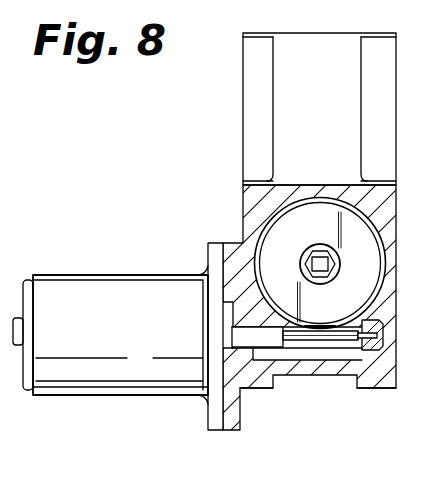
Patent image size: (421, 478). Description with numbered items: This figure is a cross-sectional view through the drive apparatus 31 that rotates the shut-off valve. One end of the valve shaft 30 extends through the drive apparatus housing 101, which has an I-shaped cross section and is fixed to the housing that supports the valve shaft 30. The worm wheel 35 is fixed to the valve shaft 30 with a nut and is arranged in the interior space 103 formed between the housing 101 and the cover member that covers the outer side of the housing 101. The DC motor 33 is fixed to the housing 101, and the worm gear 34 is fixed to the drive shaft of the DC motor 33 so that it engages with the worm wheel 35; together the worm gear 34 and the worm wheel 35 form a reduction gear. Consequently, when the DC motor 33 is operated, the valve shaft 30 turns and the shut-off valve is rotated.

The valve shaft 30 is at (319, 247).
The drive apparatus 31 is at (128, 399).
The DC motor 33 is at (104, 280).
The worm gear 34 is at (318, 337).
The worm wheel 35 is at (268, 238).
The drive apparatus housing 101 is at (250, 198).
The interior space 103 is at (209, 270).